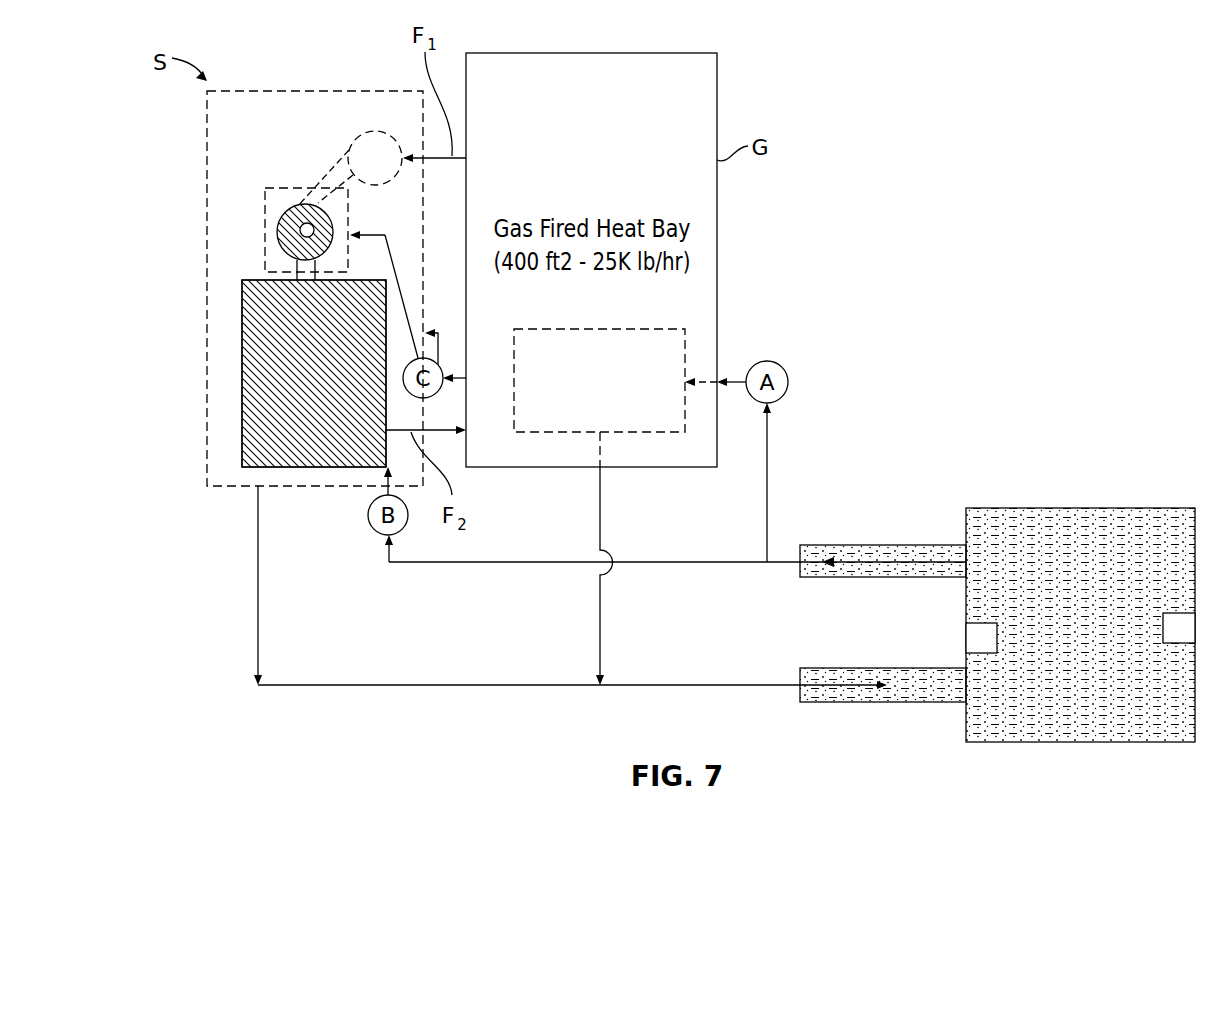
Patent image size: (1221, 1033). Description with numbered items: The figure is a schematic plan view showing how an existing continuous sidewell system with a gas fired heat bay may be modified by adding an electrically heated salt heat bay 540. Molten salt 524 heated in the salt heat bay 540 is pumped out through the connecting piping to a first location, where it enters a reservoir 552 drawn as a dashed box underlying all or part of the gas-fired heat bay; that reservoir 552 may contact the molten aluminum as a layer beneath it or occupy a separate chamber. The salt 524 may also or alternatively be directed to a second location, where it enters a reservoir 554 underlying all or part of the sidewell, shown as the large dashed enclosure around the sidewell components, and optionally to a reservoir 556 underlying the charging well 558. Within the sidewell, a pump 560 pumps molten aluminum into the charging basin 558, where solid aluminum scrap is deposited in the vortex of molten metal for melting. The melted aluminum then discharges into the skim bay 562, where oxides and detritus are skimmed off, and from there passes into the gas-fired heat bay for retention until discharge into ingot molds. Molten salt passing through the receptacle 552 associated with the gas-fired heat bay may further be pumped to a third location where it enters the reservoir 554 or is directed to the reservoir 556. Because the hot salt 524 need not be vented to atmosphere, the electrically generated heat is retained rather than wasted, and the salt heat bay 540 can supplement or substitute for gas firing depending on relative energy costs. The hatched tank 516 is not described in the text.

The thermal storage block 516 is at (318, 453).
The molten salt 524 is at (1083, 728).
The salt heat bay 540 is at (997, 609).
The reservoir 552 is at (685, 345).
The reservoir 554 is at (207, 437).
The reservoir 556 is at (265, 225).
The charging well 558 is at (296, 219).
The pump 560 is at (375, 130).
The skim bay 562 is at (242, 372).